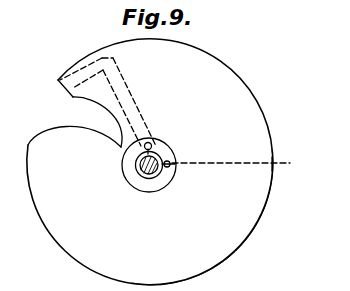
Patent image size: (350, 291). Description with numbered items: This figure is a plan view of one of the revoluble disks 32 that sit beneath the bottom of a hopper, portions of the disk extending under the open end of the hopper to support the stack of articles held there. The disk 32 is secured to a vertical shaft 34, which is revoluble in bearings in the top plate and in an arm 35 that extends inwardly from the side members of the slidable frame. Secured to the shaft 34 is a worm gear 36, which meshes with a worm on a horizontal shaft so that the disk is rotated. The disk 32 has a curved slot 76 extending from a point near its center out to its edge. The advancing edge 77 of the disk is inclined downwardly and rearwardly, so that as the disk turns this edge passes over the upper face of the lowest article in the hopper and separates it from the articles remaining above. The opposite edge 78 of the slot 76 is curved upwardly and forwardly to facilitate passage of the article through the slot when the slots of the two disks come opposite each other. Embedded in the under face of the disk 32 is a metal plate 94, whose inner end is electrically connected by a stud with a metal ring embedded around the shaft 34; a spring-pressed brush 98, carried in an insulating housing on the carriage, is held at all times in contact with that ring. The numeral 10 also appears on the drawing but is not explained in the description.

The lever / reference axis 10 is at (103, 58).
The revoluble disk 32 is at (55, 230).
The vertical shaft 34 is at (157, 172).
The arm 35 is at (157, 136).
The worm gear 36 is at (137, 183).
The curved slot 76 is at (77, 124).
The advancing edge 77 is at (52, 79).
The opposite edge of the slot 78 is at (45, 130).
The metal plate 94 is at (134, 95).
The spring-pressed brush 98 is at (176, 162).